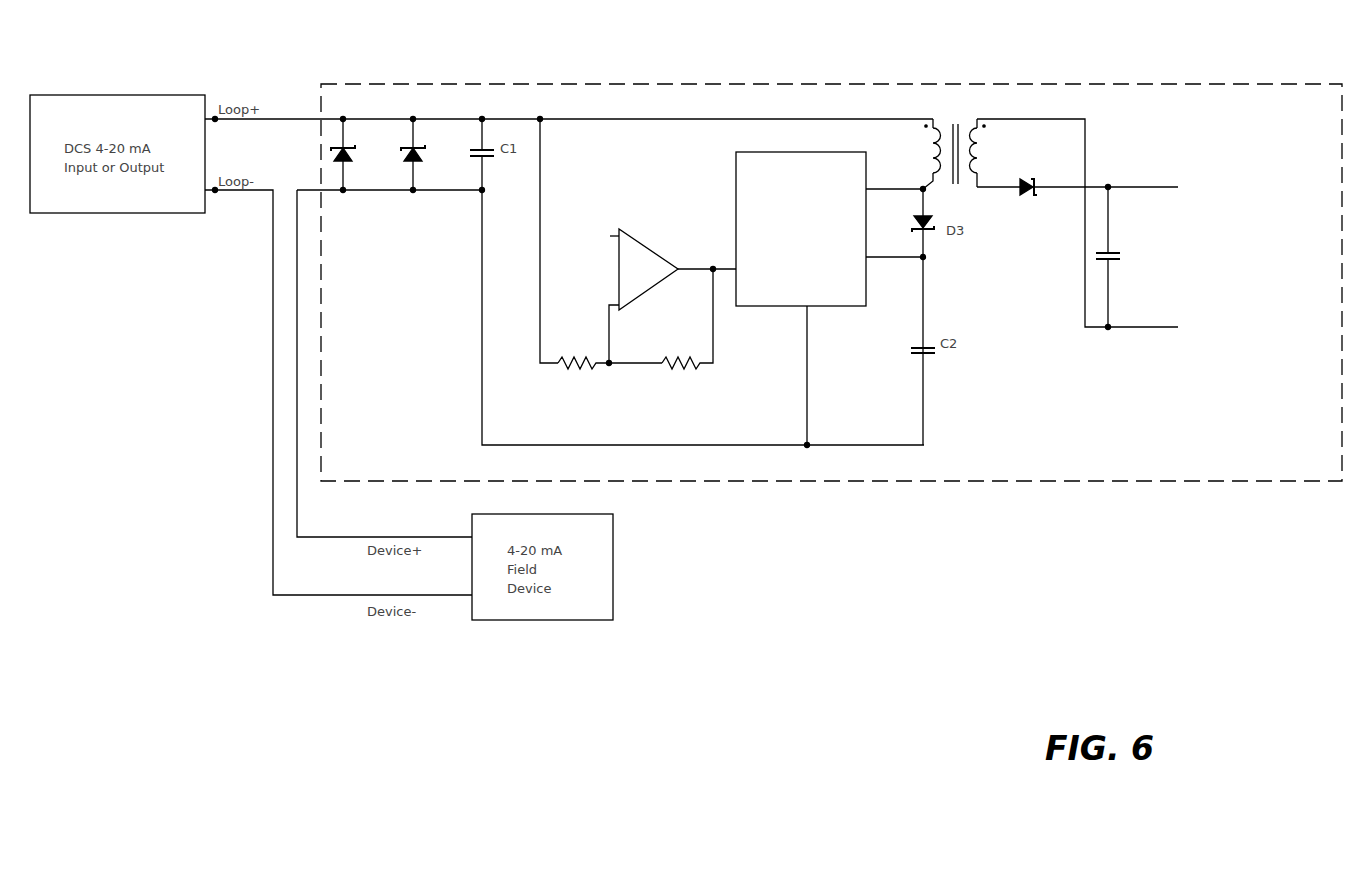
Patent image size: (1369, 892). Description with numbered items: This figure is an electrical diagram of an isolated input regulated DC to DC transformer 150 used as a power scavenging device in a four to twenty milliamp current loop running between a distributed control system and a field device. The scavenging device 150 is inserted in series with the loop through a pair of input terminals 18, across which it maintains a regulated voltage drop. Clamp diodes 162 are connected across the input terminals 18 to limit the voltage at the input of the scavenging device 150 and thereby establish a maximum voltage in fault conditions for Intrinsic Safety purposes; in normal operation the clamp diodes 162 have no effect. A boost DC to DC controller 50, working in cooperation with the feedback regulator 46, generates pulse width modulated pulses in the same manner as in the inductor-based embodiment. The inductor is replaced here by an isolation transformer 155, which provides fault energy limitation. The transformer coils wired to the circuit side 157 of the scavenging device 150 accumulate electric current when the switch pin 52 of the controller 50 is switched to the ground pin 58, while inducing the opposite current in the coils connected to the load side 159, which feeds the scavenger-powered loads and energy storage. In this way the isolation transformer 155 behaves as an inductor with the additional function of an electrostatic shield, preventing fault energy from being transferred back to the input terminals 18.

The input terminals 18 is at (266, 140).
The input regulating circuit 46 is at (673, 236).
The boost DC to DC controller 50 is at (830, 306).
The switch pin 52 is at (852, 190).
The ground pin 58 is at (797, 307).
The isolated input regulated DC to DC transformer 150 is at (1168, 80).
The isolation transformer 155 is at (970, 194).
The circuit side 157 is at (874, 98).
The load side 159 is at (1012, 106).
The clamp diodes 162 is at (411, 160).